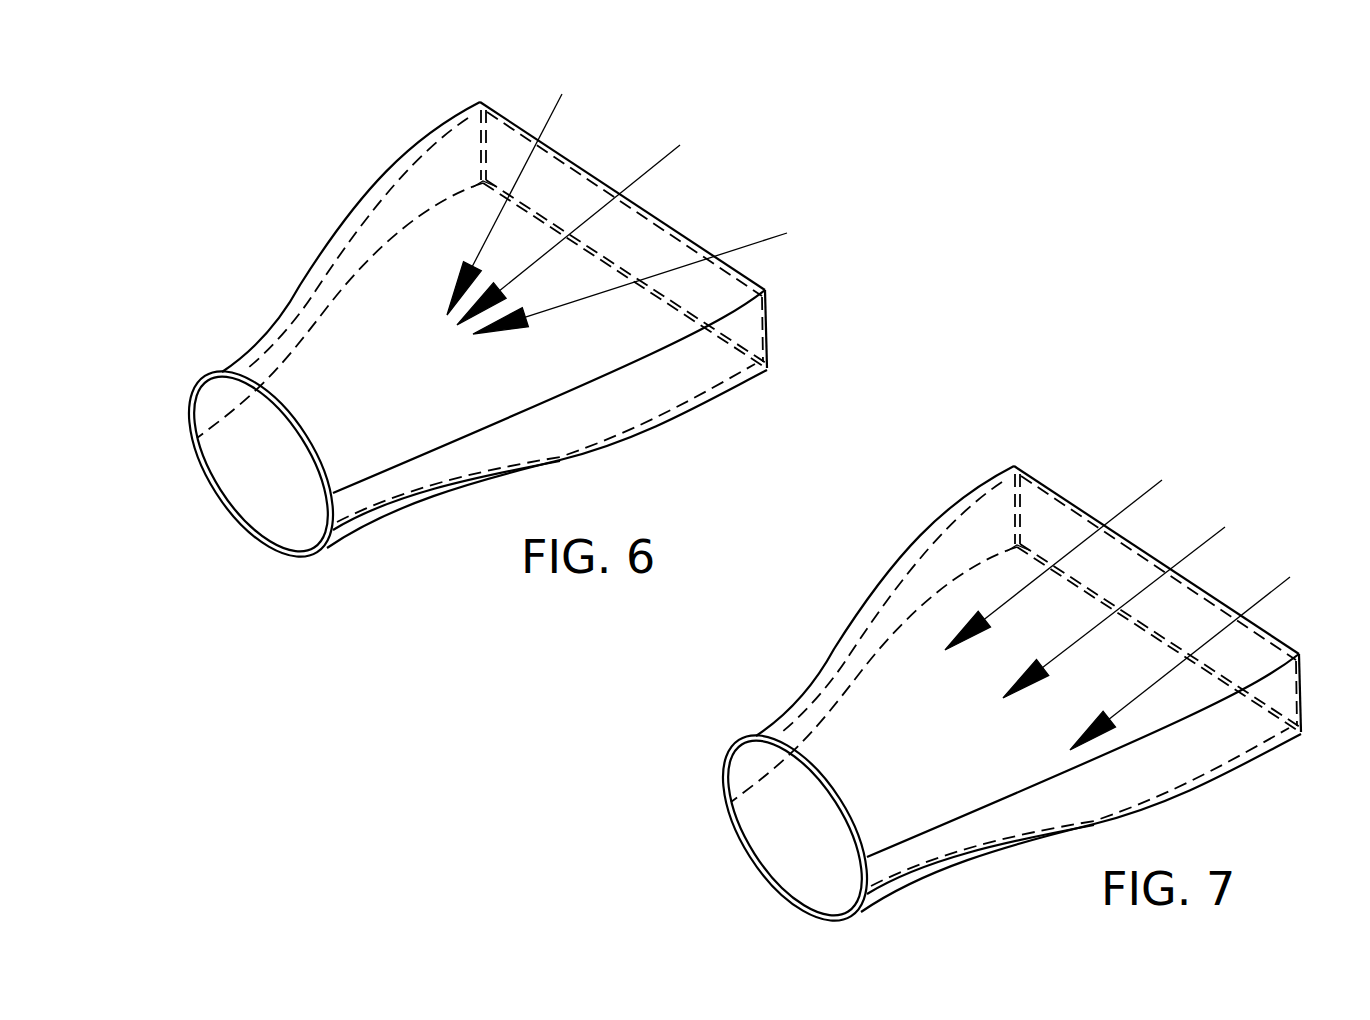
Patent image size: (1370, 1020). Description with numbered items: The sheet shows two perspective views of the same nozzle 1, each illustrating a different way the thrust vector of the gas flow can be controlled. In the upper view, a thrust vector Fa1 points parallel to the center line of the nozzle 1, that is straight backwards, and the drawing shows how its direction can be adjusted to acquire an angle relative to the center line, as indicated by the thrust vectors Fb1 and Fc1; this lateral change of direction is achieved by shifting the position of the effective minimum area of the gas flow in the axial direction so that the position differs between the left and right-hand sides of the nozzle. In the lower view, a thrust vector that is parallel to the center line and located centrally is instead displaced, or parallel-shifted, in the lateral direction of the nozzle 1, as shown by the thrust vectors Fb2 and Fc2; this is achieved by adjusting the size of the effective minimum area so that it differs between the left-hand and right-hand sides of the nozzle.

In FIG. 6, the nozzle 1 is at (279, 185).
In FIG. 7, the nozzle 1 is at (805, 555).
In FIG. 6, the thrust vector Fc1 is at (622, 84).
In FIG. 6, the thrust vector Fa1 is at (733, 115).
In FIG. 7, the thrust vector Fa1 is at (1283, 497).
In FIG. 6, the thrust vector Fb1 is at (838, 206).
In FIG. 7, the thrust vector Fb2 is at (1223, 449).
In FIG. 7, the thrust vector Fc2 is at (1353, 547).